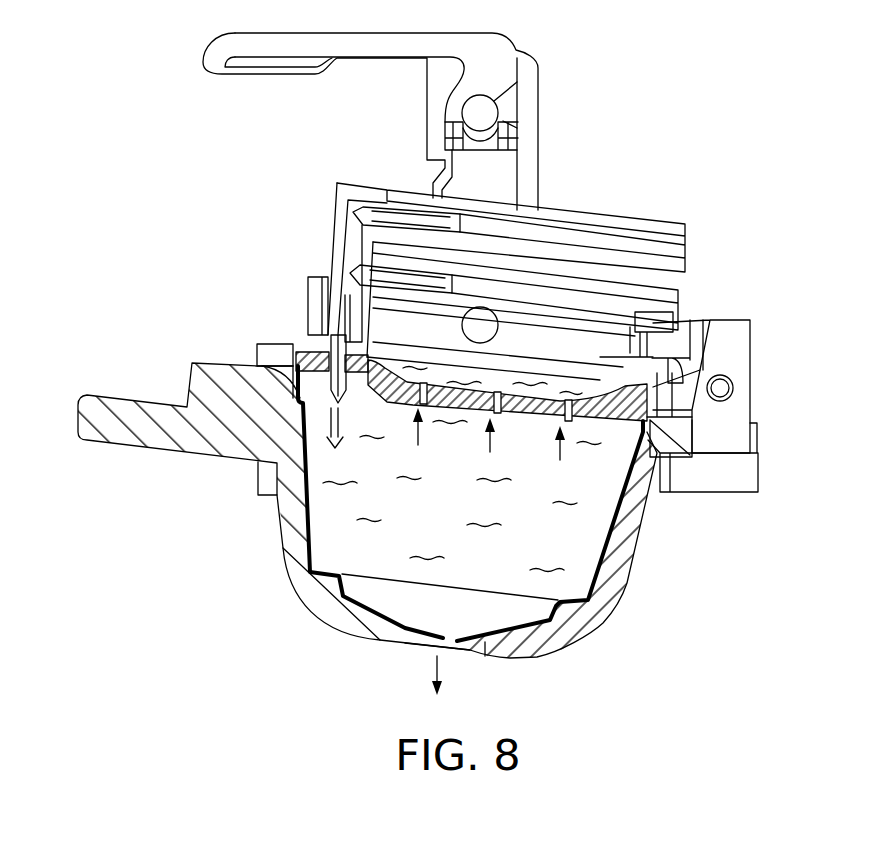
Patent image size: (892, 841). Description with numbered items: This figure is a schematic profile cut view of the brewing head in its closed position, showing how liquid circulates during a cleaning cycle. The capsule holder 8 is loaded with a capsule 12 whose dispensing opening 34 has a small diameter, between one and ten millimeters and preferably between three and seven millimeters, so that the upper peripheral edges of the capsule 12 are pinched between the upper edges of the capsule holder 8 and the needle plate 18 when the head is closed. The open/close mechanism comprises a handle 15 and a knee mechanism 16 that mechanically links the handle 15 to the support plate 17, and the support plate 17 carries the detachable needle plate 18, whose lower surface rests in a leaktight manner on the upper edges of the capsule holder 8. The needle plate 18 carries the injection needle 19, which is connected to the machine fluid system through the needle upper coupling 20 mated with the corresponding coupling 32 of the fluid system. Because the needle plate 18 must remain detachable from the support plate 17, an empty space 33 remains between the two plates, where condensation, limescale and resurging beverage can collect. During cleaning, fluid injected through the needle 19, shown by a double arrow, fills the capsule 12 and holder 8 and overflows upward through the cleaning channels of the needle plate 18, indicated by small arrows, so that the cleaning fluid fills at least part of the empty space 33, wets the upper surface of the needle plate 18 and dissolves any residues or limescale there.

The capsule holder 8 is at (558, 637).
The capsule 12 is at (294, 526).
The handle 15 is at (370, 49).
The knee mechanism 16 is at (494, 183).
The support plate 17 is at (556, 362).
The needle plate 18 is at (603, 413).
The injection needle 19 is at (300, 372).
The needle upper coupling 20 is at (322, 350).
The coupling of the fluid system 32 is at (326, 302).
The empty space 33 is at (576, 388).
The dispensing opening 34 is at (438, 621).